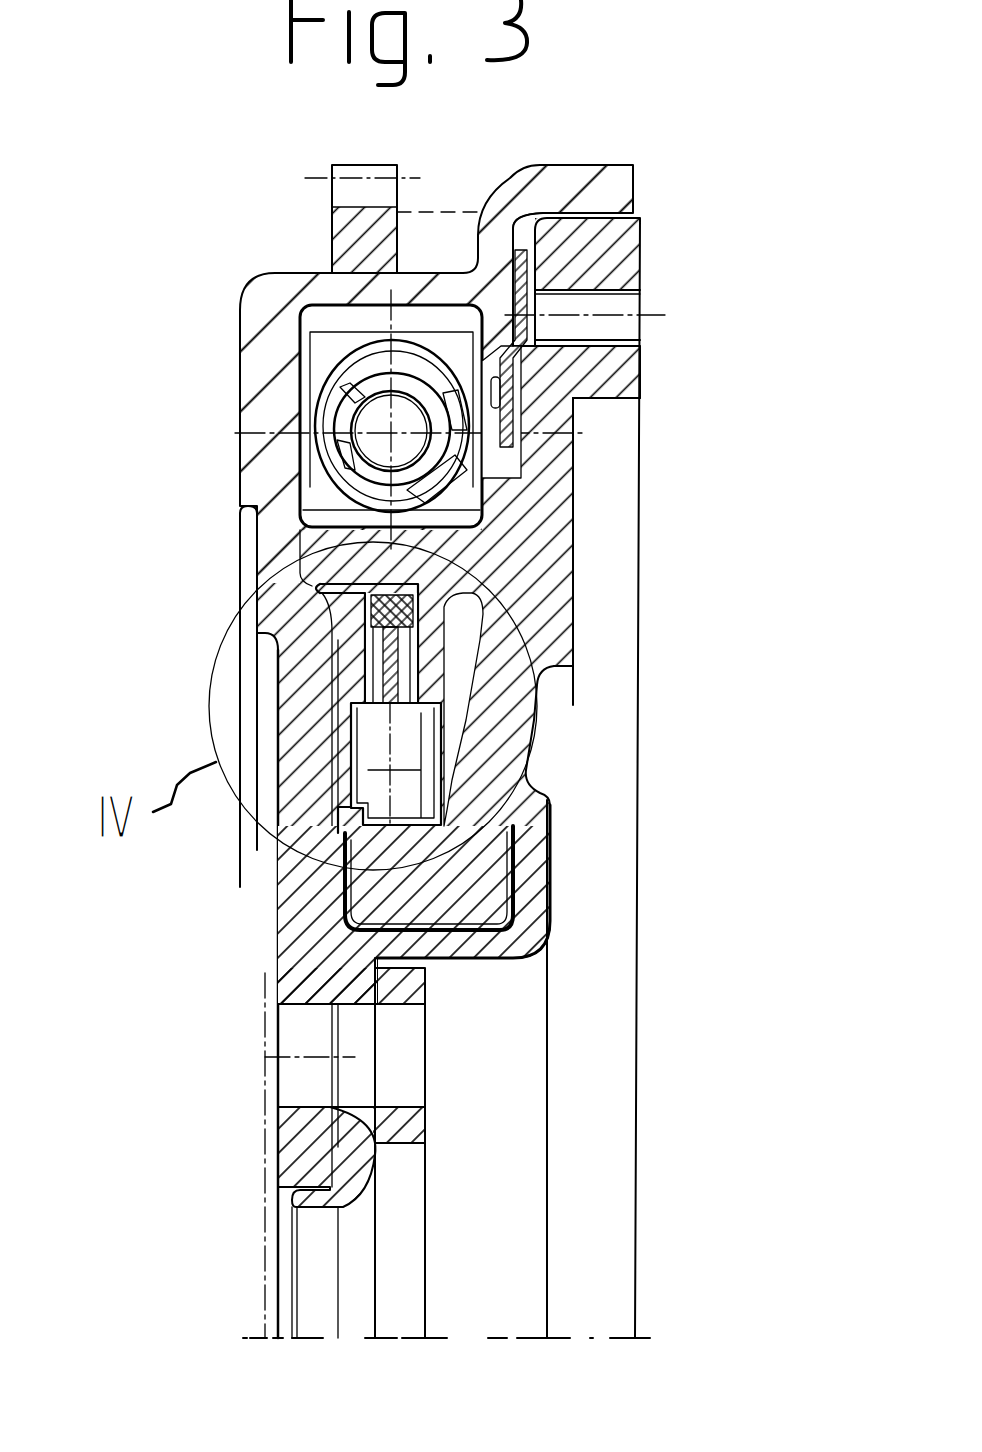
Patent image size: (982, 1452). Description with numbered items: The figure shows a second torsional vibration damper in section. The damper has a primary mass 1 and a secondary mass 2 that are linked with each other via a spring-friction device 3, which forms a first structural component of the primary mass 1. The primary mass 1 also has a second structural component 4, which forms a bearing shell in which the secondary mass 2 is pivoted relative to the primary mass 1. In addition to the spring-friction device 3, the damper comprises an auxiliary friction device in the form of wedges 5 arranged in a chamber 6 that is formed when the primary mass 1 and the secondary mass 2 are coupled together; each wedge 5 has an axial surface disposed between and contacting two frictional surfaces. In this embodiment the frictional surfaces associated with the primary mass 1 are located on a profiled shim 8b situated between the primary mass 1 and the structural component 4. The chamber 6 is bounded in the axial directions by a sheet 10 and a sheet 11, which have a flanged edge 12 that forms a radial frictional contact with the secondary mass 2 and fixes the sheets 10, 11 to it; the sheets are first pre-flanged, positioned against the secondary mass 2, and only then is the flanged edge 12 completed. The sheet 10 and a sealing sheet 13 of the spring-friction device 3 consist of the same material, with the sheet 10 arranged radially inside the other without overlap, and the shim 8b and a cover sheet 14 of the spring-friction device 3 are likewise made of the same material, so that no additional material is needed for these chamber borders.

The primary mass 1 is at (257, 414).
The secondary mass 2 is at (607, 260).
The spring-friction device 3 is at (440, 472).
The second structural component 4 is at (357, 967).
The wedge 5 is at (447, 590).
The chamber 6 is at (354, 710).
The profiled shim 8b is at (338, 1138).
The sheet 10 is at (364, 627).
The sheet 11 is at (445, 762).
The flanged edge 12 is at (358, 584).
The sealing sheet 13 is at (540, 368).
The cover sheet 14 is at (581, 404).